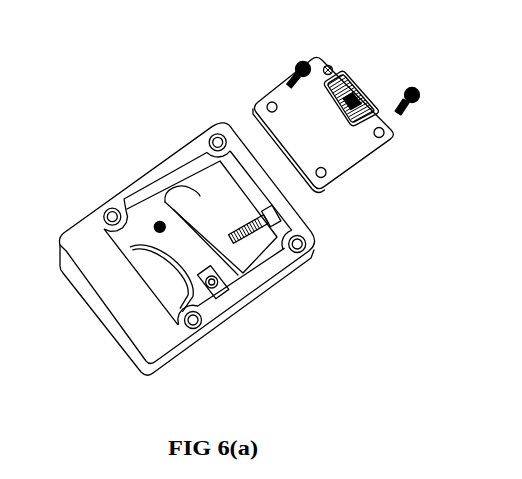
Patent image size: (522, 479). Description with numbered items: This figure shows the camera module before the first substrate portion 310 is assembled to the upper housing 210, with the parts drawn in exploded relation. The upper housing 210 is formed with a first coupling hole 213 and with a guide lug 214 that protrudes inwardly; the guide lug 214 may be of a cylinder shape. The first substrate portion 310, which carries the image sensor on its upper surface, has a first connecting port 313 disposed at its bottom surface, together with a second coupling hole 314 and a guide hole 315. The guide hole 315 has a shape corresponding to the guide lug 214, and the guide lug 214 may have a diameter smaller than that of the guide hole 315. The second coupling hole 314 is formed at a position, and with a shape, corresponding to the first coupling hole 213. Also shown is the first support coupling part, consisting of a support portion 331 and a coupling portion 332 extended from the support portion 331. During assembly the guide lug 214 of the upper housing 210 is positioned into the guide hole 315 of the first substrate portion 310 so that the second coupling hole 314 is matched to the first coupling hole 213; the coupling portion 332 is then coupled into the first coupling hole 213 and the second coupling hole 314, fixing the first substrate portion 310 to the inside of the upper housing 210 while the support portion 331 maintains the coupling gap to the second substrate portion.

The upper housing 210 is at (80, 235).
The first coupling hole 213 is at (222, 290).
The guide lug 214 is at (160, 221).
The first substrate portion 310 is at (345, 157).
The first connecting port 313 is at (353, 83).
The second coupling hole 314 is at (260, 104).
The guide hole 315 is at (329, 64).
The support portion 331 is at (419, 103).
The coupling portion 332 is at (400, 116).